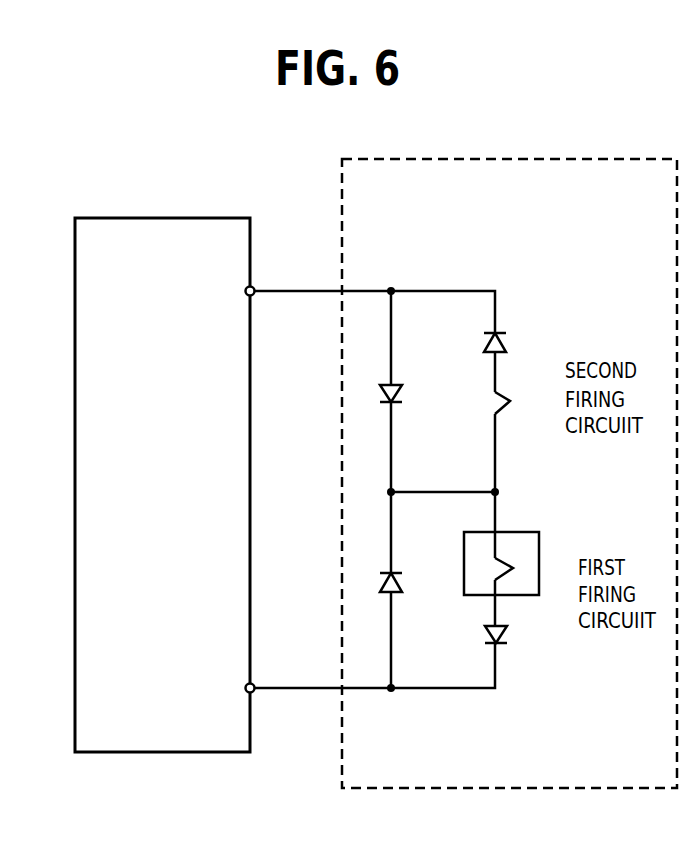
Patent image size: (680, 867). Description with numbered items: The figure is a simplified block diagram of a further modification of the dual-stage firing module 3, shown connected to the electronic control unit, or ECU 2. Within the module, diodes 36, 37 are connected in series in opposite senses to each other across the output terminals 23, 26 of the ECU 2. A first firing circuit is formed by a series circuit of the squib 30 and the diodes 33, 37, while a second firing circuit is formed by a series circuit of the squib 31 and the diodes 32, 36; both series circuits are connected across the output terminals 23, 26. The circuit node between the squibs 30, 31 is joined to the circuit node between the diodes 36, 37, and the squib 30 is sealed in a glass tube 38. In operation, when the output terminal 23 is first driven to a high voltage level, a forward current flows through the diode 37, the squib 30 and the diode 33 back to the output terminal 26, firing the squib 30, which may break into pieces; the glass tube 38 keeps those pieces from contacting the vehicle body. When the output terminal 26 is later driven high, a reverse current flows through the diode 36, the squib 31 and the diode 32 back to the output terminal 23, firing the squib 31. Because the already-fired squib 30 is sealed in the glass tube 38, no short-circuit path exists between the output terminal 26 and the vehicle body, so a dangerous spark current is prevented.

The ECU 2 is at (156, 218).
The dual-stage firing module 3 is at (476, 160).
The output terminal 23 is at (256, 290).
The output terminal 26 is at (256, 688).
The squib 30 is at (509, 566).
The squib 31 is at (513, 397).
The diode 32 is at (505, 345).
The diode 33 is at (507, 634).
The diode 36 is at (400, 588).
The diode 37 is at (398, 393).
The glass tube 38 is at (543, 560).